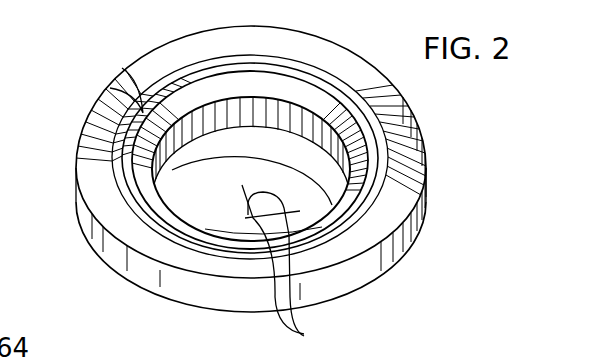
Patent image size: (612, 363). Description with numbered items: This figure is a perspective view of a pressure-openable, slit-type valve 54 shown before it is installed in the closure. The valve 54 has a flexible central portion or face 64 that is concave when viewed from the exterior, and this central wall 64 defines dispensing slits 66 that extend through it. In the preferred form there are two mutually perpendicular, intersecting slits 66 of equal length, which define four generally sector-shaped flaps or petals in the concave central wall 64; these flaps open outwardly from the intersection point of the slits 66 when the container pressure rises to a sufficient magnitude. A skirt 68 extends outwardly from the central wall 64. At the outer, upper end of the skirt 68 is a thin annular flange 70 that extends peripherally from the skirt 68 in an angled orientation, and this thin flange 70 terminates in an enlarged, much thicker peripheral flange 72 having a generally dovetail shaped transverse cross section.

The valve 54 is at (428, 172).
The central wall 64 is at (218, 177).
The dispensing slits 66 is at (290, 264).
The skirt 68 is at (307, 128).
The annular flange 70 is at (110, 88).
The peripheral flange 72 is at (397, 249).